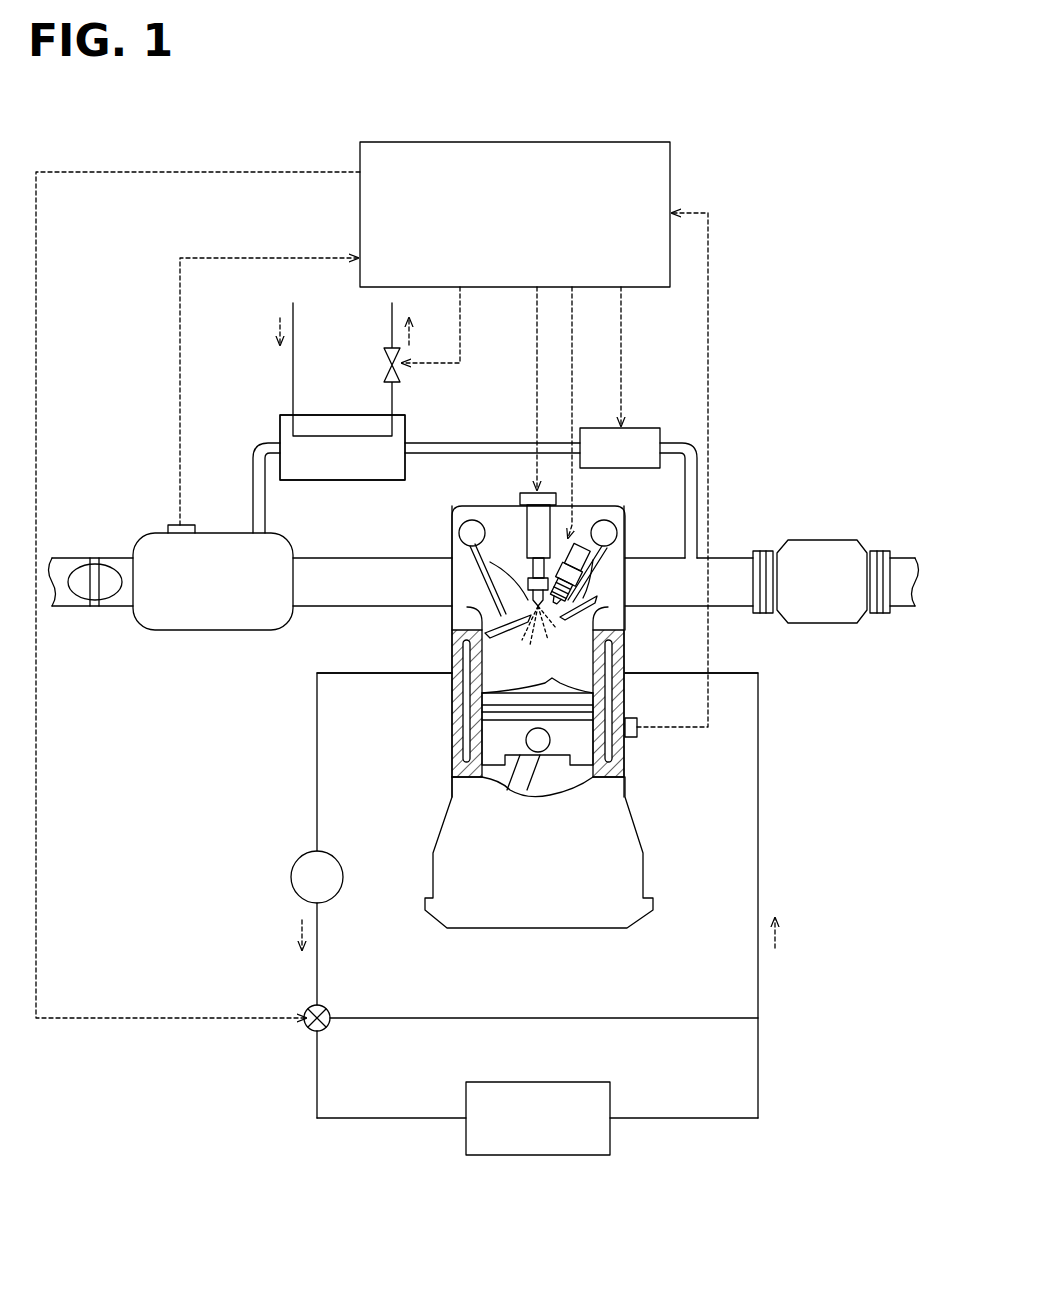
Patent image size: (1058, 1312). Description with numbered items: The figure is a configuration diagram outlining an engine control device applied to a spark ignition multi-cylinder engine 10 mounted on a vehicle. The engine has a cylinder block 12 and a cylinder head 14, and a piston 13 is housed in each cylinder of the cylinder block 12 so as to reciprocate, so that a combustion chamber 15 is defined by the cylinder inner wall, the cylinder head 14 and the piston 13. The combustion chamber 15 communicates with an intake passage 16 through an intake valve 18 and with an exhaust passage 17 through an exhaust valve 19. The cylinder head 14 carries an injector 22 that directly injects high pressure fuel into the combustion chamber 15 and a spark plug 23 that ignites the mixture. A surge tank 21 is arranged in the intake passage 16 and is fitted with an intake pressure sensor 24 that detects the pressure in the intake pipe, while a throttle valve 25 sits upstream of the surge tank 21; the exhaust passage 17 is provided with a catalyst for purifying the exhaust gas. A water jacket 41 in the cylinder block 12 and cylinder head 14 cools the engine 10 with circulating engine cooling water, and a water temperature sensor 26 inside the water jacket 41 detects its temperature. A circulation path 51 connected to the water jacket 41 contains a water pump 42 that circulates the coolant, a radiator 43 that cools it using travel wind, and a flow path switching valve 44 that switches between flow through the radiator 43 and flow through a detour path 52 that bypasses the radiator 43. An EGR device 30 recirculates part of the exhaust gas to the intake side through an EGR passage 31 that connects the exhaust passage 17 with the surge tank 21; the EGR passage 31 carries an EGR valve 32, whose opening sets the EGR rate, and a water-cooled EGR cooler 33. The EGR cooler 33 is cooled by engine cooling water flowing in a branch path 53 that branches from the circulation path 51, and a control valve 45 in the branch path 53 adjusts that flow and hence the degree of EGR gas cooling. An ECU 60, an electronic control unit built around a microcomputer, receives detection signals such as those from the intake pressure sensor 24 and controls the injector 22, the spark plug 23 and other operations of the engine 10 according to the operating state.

The engine 10 is at (780, 866).
The cylinder block 12 is at (465, 808).
The piston 13 is at (600, 752).
The cylinder head 14 is at (488, 515).
The combustion chamber 15 is at (580, 648).
The intake passage 16 is at (340, 606).
The exhaust passage 17 is at (727, 608).
The intake valve 18 is at (460, 630).
The exhaust valve 19 is at (622, 628).
The surge tank 21 is at (185, 630).
The injector 22 is at (580, 546).
The spark plug 23 is at (520, 498).
The intake pressure sensor 24 is at (186, 523).
The throttle valve 25 is at (65, 600).
The water temperature sensor 26 is at (640, 735).
The EGR device 30 is at (266, 426).
The EGR passage 31 is at (497, 442).
The EGR valve 32 is at (645, 428).
The EGR cooler 33 is at (358, 480).
The water jacket 41 is at (462, 728).
The water pump 42 is at (291, 877).
The radiator 43 is at (530, 1155).
The flow path switching valve 44 is at (312, 1031).
The control valve 45 is at (402, 372).
The circulation path 51 is at (317, 728).
The detour path 52 is at (455, 1018).
The branch path 53 is at (293, 308).
The ECU 60 is at (537, 142).